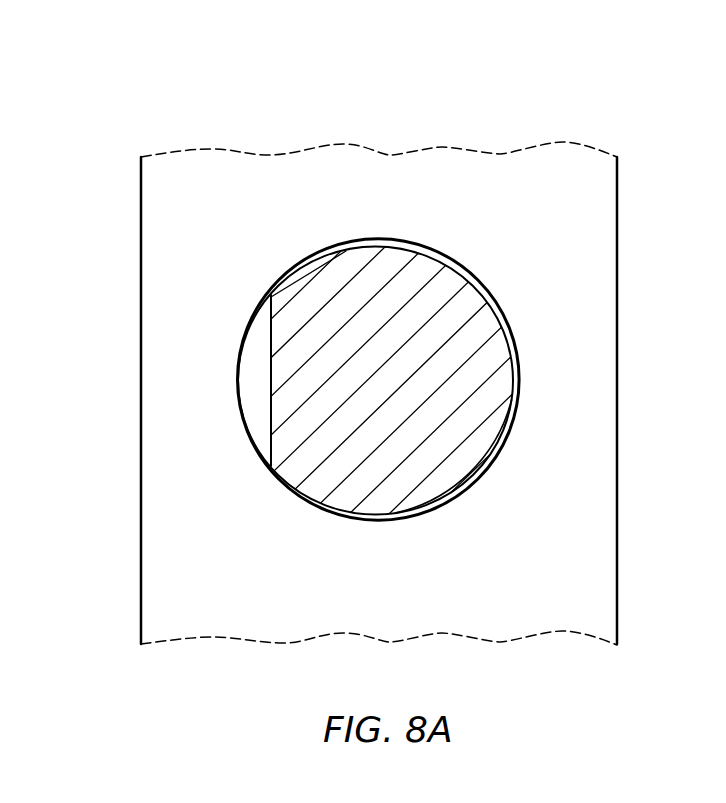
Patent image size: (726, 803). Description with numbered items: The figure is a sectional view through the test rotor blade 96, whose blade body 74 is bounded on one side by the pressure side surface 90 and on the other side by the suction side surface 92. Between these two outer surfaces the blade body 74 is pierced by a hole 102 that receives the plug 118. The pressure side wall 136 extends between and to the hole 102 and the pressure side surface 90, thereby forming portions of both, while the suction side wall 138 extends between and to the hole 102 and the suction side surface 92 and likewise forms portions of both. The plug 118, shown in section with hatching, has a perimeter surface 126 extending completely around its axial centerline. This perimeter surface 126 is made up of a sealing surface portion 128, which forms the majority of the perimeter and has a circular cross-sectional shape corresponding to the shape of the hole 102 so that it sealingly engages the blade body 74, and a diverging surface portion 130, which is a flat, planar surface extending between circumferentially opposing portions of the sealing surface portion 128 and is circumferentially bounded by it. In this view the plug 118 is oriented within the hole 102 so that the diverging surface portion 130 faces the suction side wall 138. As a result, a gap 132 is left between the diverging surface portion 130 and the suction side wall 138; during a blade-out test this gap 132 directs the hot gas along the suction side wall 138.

The test rotor blade 96 is at (608, 70).
The blade body 74 is at (462, 168).
The pressure side surface 90 is at (617, 280).
The suction side surface 92 is at (141, 328).
The sealing surface portion 128 is at (482, 285).
The plug 118 is at (468, 385).
The gap 132 is at (242, 350).
The suction side wall 138 is at (173, 405).
The pressure side wall 136 is at (590, 437).
The diverging surface portion 130 is at (271, 438).
The hole 102 is at (487, 510).
The perimeter surface 126 is at (402, 538).